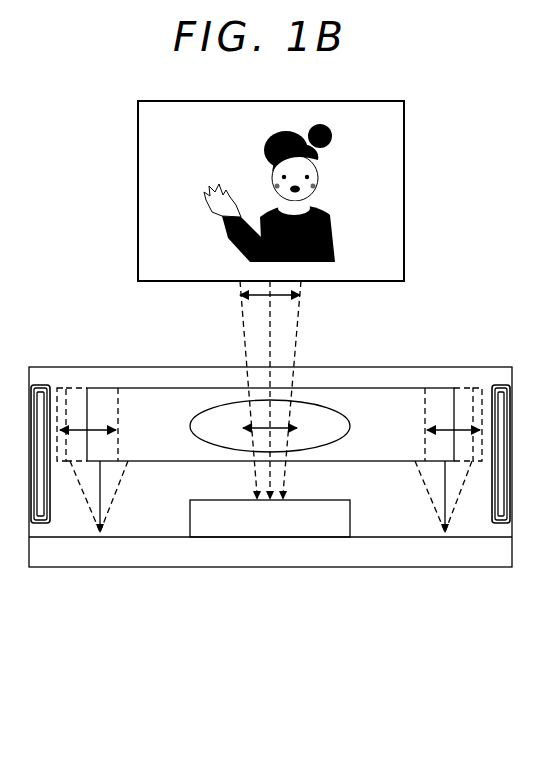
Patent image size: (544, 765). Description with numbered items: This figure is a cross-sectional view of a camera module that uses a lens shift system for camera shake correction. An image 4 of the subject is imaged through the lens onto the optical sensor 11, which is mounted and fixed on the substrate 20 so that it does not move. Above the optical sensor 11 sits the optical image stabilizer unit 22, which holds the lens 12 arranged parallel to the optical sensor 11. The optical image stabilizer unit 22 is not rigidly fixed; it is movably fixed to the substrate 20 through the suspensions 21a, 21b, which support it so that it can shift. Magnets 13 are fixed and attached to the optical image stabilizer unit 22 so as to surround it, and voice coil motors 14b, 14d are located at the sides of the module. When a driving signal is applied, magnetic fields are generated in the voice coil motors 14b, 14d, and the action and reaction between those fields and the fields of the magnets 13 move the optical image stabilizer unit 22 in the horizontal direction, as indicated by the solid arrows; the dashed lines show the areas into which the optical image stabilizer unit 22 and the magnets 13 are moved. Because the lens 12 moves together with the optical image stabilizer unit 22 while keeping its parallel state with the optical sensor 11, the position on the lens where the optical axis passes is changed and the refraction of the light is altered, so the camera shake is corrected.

The image 4 is at (404, 182).
The optical sensor 11 is at (263, 530).
The lens 12 is at (214, 400).
The magnet 13 is at (82, 395).
The voice coil motor 14b is at (498, 392).
The voice coil motor 14d is at (44, 392).
The substrate 20 is at (328, 553).
The suspension 21a is at (445, 490).
The suspension 21b is at (100, 490).
The optical image stabilizer unit 22 is at (139, 395).